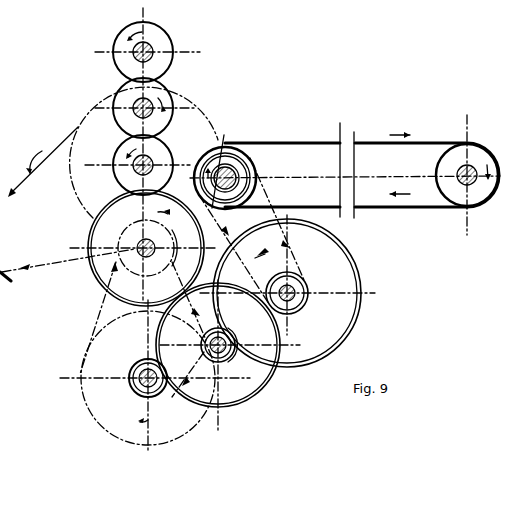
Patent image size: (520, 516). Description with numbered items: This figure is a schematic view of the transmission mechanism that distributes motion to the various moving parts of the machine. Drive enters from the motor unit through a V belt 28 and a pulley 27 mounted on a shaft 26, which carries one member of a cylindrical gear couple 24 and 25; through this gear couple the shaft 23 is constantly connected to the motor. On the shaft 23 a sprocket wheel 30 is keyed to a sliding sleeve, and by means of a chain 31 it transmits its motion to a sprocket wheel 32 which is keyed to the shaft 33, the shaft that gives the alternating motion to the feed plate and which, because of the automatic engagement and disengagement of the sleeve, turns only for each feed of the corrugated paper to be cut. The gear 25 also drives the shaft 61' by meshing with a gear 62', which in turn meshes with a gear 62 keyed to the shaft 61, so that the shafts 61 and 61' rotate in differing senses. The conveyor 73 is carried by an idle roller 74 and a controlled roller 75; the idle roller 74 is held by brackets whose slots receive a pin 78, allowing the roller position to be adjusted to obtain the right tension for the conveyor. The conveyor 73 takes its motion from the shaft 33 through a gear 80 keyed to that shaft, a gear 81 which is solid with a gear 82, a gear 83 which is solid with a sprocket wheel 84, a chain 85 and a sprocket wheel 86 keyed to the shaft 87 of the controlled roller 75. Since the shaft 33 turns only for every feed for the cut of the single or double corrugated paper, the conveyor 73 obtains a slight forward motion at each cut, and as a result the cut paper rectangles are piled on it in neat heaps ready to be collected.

The shaft 61 is at (143, 52).
The gear 62 is at (107, 52).
The shaft 61' is at (143, 108).
The gear 62' is at (107, 108).
The pulley 27 is at (68, 137).
The V belt 28 is at (42, 160).
The cylindrical gear 25 is at (143, 165).
The shaft 26 is at (135, 170).
The cylindrical gear 24 is at (135, 240).
The shaft 23 is at (133, 244).
The sprocket wheel 30 is at (136, 249).
The chain 31 is at (105, 302).
The sprocket wheel 32 is at (100, 332).
The shaft 33 is at (127, 372).
The gear 80 is at (128, 385).
The controlled roller 75 is at (228, 165).
The shaft 87 is at (240, 149).
The sprocket wheel 86 is at (302, 143).
The chain 85 is at (320, 125).
The conveyor 73 is at (317, 207).
The sprocket wheel 84 is at (338, 269).
The pin 78 is at (460, 187).
The idle roller 74 is at (467, 192).
The gear 83 is at (312, 293).
The gear 81 is at (232, 362).
The gear 82 is at (238, 372).